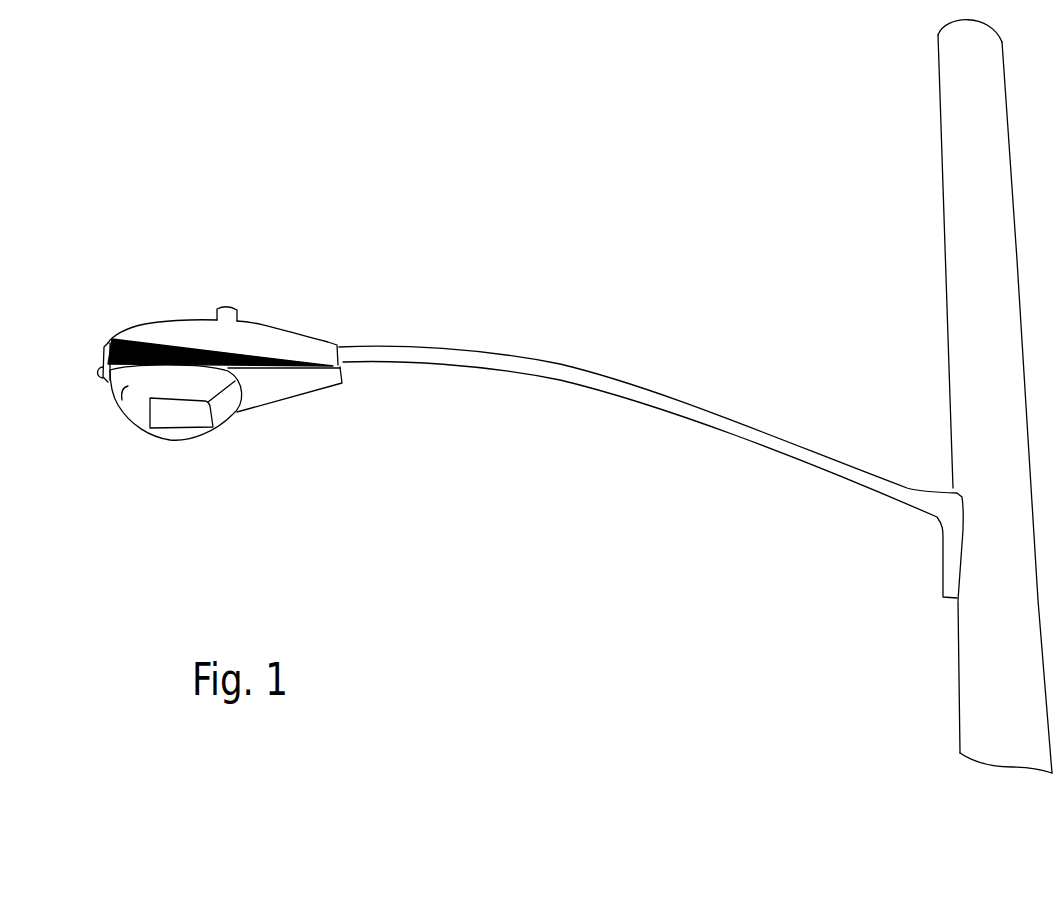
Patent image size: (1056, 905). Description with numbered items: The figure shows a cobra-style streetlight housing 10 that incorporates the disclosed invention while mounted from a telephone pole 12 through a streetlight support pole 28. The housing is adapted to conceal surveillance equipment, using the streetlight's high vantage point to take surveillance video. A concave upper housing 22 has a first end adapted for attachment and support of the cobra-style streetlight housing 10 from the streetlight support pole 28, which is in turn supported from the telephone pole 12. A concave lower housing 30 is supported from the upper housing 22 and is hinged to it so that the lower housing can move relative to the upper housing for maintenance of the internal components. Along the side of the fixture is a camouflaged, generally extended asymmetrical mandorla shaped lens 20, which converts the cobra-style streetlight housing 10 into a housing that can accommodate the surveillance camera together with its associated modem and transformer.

The cobra-style streetlight housing 10 is at (264, 338).
The telephone pole 12 is at (943, 225).
The mandorla shaped lens 20 is at (147, 338).
The upper housing 22 is at (263, 328).
The streetlight support pole 28 is at (553, 358).
The lower housing 30 is at (283, 404).